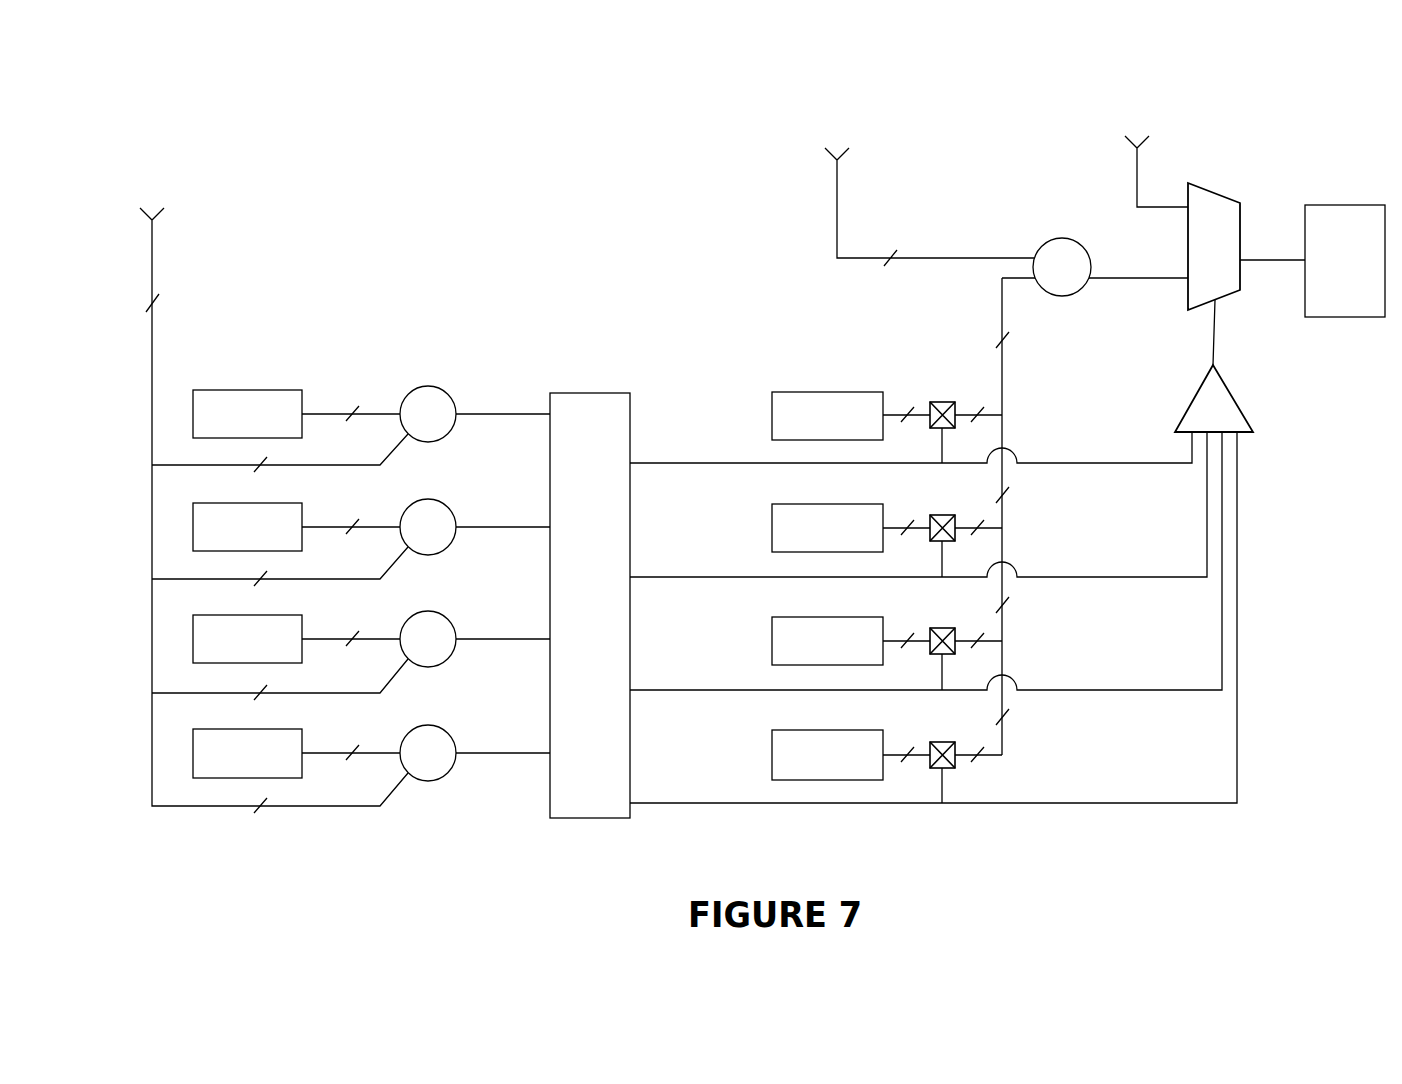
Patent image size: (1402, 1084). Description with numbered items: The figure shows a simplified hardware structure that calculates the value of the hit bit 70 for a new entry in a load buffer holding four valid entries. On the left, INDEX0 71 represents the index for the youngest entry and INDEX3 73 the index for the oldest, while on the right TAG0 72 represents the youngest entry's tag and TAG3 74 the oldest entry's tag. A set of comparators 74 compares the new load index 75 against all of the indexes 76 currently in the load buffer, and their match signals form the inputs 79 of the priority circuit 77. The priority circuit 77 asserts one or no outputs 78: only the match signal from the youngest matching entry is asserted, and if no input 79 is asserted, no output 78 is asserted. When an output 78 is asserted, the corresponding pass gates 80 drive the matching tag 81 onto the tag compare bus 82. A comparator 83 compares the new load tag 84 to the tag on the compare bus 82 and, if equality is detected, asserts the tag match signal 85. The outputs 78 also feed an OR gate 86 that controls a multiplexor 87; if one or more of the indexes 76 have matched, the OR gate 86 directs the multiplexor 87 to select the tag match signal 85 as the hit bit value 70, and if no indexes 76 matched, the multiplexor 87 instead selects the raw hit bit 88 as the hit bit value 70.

The hit bit 70 is at (1350, 317).
The INDEX0 71 is at (258, 390).
The TAG0 72 is at (800, 392).
The INDEX3 73 is at (193, 764).
The comparators 74 is at (446, 434).
The new load index 75 is at (152, 258).
The indexes 76 is at (193, 404).
The priority circuit 77 is at (596, 393).
The outputs 78 is at (660, 465).
The input 79 is at (548, 416).
The pass gates 80 is at (946, 402).
The tag 81 is at (772, 415).
The tag compare bus 82 is at (1002, 382).
The comparator 83 is at (1048, 242).
The new load tag 84 is at (837, 205).
The tag match signal 85 is at (1125, 280).
The OR gate 86 is at (1240, 412).
The multiplexor 87 is at (1222, 196).
The raw hit bit 88 is at (1137, 175).